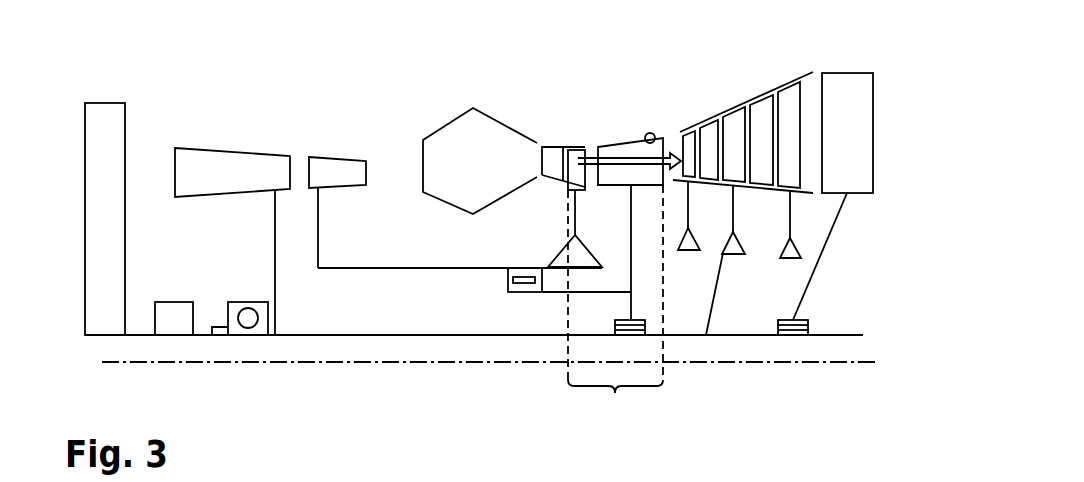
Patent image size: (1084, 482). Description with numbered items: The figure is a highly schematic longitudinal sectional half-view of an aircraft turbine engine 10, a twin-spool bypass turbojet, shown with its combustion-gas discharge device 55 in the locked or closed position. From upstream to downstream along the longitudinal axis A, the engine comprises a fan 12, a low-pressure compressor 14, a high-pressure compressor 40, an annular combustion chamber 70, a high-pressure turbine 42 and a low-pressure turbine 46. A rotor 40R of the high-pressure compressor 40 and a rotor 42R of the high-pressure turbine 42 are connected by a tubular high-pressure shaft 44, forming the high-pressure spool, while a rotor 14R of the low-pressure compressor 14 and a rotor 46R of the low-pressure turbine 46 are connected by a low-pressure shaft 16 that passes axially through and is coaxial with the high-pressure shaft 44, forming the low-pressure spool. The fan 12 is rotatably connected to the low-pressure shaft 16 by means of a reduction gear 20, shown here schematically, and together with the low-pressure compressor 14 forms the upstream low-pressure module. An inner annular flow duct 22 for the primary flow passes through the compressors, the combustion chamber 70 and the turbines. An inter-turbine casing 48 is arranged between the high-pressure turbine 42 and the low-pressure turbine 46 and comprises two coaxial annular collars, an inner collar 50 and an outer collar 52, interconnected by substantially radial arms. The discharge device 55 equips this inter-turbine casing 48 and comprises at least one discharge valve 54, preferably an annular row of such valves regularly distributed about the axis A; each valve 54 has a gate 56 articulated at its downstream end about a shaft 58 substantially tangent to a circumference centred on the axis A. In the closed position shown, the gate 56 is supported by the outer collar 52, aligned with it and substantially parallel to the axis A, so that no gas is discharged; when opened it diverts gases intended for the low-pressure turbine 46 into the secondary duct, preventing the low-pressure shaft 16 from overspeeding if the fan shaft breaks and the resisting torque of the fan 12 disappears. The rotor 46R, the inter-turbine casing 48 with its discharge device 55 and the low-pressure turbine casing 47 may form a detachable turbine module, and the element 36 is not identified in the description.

The turbine engine 10 is at (895, 97).
The fan 12 is at (100, 192).
The low-pressure compressor 14 is at (240, 150).
The rotor of the low-pressure compressor 14R is at (273, 207).
The low-pressure (LP) shaft 16 is at (460, 335).
The reduction gear 20 is at (180, 313).
The inner annular flow duct 22 is at (563, 177).
The pump 36 is at (258, 310).
The high-pressure compressor 40 is at (333, 157).
The rotor of the high-pressure compressor 40R is at (319, 230).
The high-pressure turbine 42 is at (578, 148).
The rotor of the high-pressure turbine 42R is at (575, 222).
The high-pressure (HP) shaft 44 is at (470, 268).
The low-pressure turbine 46 is at (777, 87).
The rotor of the low-pressure turbine 46R is at (713, 308).
The casing of the low-pressure turbine 47 is at (615, 304).
The inter-turbine casing 48 is at (651, 126).
The inner collar 50 is at (612, 185).
The outer collar 52 is at (610, 147).
The discharge valve 54 is at (643, 168).
The device for discharging combustion gas 55 is at (602, 60).
The gate 56 is at (627, 145).
The shaft 58 is at (656, 135).
The annular combustion chamber 70 is at (445, 125).
The longitudinal axis A is at (180, 362).